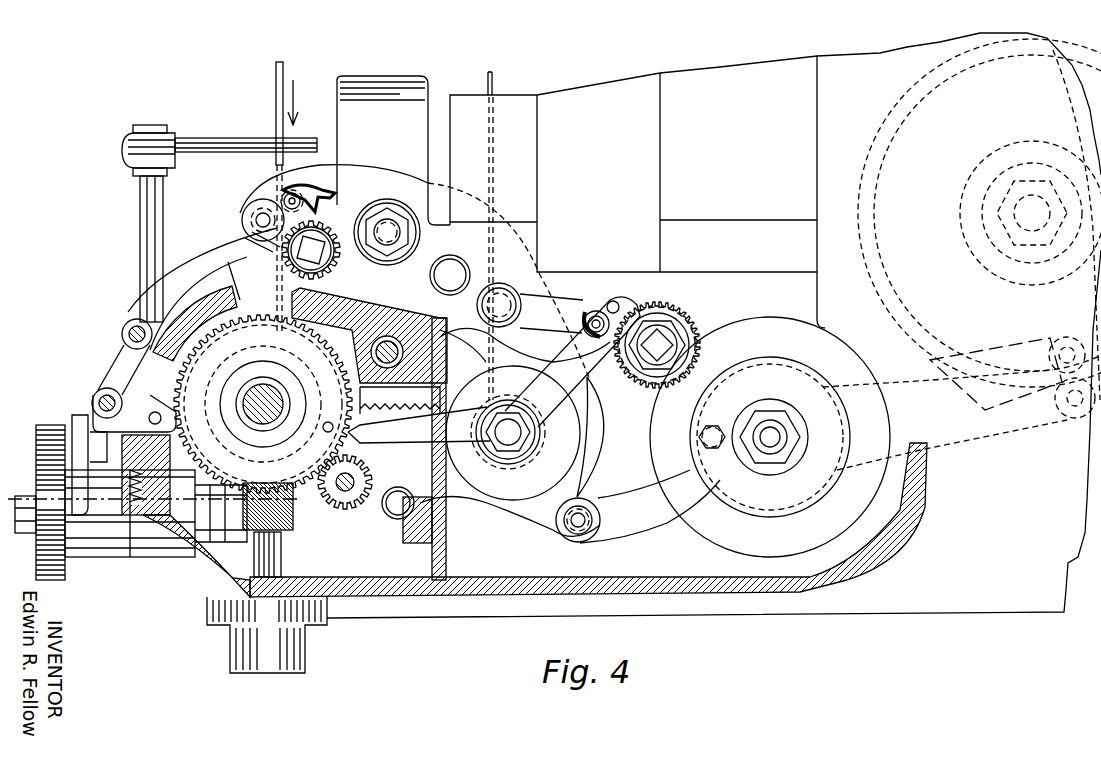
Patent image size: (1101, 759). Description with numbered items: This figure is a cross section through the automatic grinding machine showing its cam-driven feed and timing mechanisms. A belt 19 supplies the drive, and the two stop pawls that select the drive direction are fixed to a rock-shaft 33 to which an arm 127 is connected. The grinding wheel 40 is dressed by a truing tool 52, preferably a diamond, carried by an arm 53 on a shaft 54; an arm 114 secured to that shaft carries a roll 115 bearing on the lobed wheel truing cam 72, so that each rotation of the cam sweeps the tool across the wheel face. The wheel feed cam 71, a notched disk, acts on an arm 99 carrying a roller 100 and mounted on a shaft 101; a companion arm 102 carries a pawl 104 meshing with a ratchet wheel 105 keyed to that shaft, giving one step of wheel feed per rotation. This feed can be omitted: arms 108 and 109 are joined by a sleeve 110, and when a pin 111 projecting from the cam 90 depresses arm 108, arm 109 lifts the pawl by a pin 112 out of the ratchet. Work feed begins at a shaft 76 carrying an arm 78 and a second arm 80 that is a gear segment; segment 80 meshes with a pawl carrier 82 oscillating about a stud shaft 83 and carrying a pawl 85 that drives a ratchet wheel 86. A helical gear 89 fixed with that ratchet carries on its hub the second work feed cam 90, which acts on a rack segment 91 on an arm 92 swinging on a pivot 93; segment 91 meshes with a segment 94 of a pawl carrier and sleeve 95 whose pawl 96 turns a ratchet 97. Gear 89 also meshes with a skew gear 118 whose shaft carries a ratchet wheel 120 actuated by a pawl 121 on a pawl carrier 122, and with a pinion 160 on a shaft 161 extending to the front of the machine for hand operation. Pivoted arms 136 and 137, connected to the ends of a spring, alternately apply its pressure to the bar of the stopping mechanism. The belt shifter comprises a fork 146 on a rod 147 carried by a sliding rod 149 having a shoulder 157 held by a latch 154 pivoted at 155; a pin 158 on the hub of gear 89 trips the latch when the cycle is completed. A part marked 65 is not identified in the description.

The belt 19 is at (276, 95).
The rock-shaft 33 is at (388, 230).
The grinding wheel 40 is at (872, 289).
The truing tool 52 is at (1070, 420).
The arm 53 is at (983, 433).
The shaft 54 is at (768, 434).
The gear 65 is at (338, 258).
The wheel feed cam 71 is at (600, 413).
The wheel truing cam 72 is at (530, 523).
The shaft 76 is at (377, 350).
The arm 78 is at (485, 300).
The second arm 80 is at (355, 314).
The pawl carrier 82 is at (227, 303).
The stud shaft 83 is at (264, 410).
The pawl 85 is at (233, 278).
The ratchet wheel 86 is at (286, 456).
The helical gear 89 is at (192, 440).
The second work feed cam 90 is at (190, 372).
The rack or gear segment 91 is at (280, 262).
The arm 92 is at (181, 270).
The pivot 93 is at (130, 327).
The complemental segment 94 is at (245, 238).
The pawl carrier and sleeve 95 is at (262, 212).
The pawl 96 is at (318, 205).
The ratchet 97 is at (330, 236).
The arm 99 is at (537, 308).
The roller 100 is at (510, 317).
The shaft 101 is at (660, 342).
The arm 102 is at (590, 313).
The pawl 104 is at (619, 305).
The ratchet wheel 105 is at (675, 315).
The arm 108 is at (467, 441).
The arm 109 is at (546, 420).
The sleeve 110 is at (503, 408).
The pin 111 is at (329, 423).
The pin 112 is at (617, 297).
The arm 114 is at (637, 523).
The roll 115 is at (590, 543).
The spiral or skew gear 118 is at (287, 523).
The ratchet wheel 120 is at (43, 480).
The pawl 121 is at (50, 462).
The pawl carrier 122 is at (83, 443).
The arm 127 is at (336, 168).
The pivoted arm 136 is at (405, 282).
The pivoted arm 137 is at (348, 530).
The fork 146 is at (188, 140).
The rod 147 is at (147, 208).
The horizontal rod 149 is at (100, 390).
The latch 154 is at (112, 392).
The pivot 155 is at (145, 405).
The shoulder 157 is at (97, 407).
The pin 158 is at (136, 434).
The pinion 160 is at (385, 505).
The shaft 161 is at (360, 480).